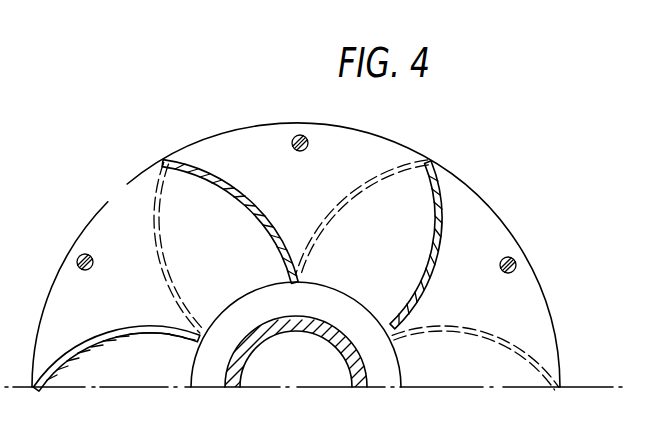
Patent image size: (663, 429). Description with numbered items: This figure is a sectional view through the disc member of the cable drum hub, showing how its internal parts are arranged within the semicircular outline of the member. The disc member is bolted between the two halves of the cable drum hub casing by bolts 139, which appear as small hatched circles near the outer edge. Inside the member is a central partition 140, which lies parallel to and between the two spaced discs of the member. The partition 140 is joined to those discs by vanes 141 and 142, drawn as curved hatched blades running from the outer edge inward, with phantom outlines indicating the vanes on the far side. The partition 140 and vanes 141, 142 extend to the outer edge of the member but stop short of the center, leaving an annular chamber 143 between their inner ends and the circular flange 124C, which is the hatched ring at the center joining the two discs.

The bolt 139 is at (297, 135).
The central partition 140 is at (322, 188).
The vane 141 is at (233, 193).
The vane 142 is at (162, 278).
The annular chamber 143 is at (320, 312).
The circular flange 124C is at (270, 330).